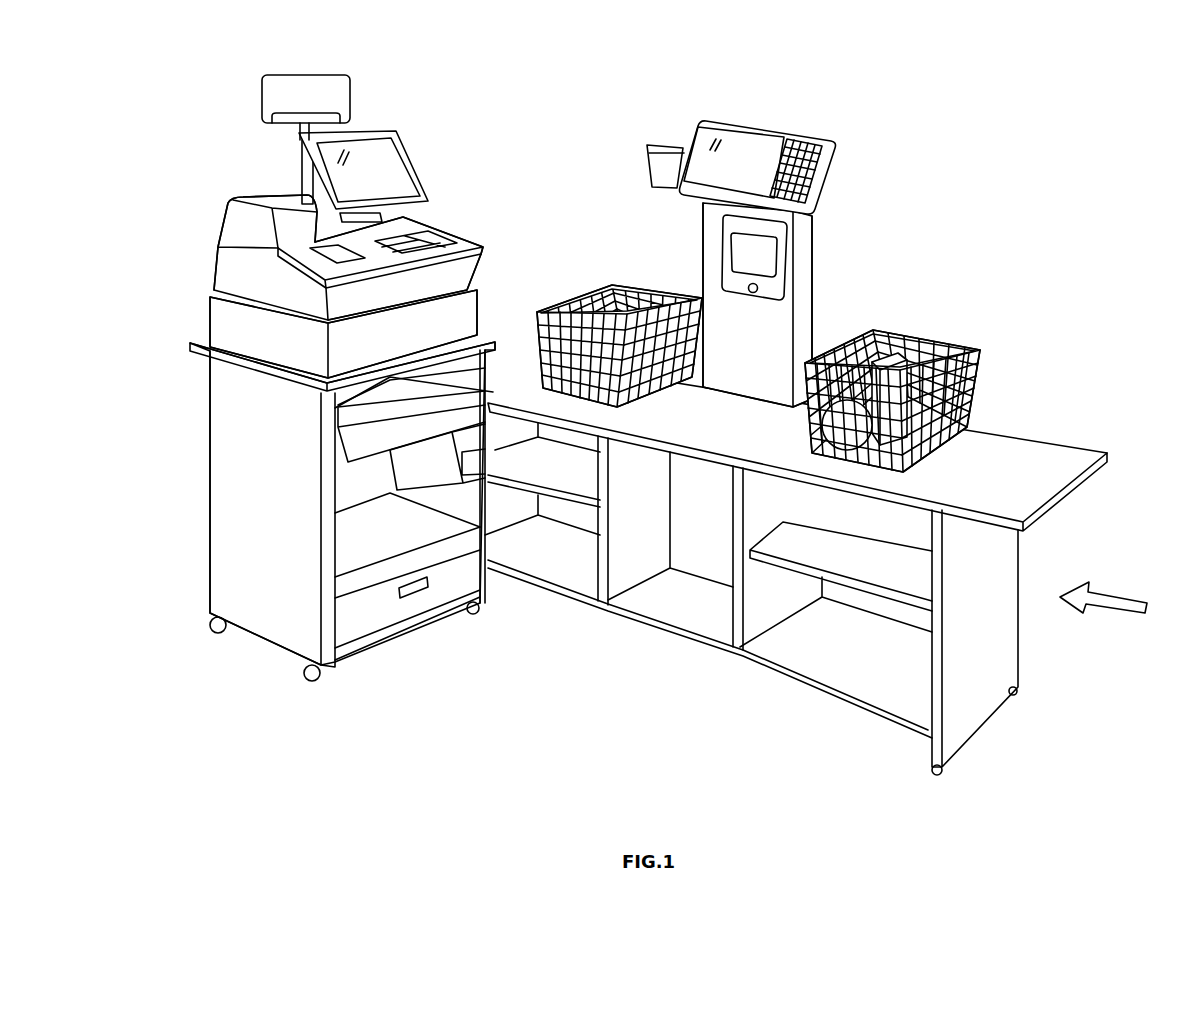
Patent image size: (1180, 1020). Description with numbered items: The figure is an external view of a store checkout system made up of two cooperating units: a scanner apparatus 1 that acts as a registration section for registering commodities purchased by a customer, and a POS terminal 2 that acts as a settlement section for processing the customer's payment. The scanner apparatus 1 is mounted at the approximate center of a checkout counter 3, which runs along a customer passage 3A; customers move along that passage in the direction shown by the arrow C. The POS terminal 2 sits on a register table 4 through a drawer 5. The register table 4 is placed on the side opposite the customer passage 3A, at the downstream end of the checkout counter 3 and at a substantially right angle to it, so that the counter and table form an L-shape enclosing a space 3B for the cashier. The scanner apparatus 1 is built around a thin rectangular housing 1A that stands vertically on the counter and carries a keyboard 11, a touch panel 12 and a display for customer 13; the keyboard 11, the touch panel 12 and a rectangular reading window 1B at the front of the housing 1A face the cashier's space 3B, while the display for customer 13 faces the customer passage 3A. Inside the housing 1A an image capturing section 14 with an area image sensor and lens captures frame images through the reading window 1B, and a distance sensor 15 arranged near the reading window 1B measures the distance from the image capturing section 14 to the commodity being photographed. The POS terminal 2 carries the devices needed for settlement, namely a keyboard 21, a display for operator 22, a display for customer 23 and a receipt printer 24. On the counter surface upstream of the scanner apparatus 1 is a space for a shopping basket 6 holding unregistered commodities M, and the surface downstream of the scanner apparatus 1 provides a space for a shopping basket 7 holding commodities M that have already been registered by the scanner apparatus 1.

The scanner apparatus 1 is at (745, 245).
The housing 1A is at (814, 290).
The reading window 1B is at (745, 254).
The POS terminal 2 is at (336, 197).
The checkout counter 3 is at (818, 576).
The customer passage 3A is at (1090, 636).
The space for a shop clerk 3B is at (568, 688).
The register table 4 is at (210, 460).
The drawer 5 is at (210, 318).
The shopping basket 6 is at (913, 382).
The shopping basket 7 is at (578, 296).
The keyboard 11 is at (758, 148).
The touch panel 12 is at (750, 135).
The display for customer 13 is at (647, 172).
The image capturing section 14 is at (778, 228).
The distance sensor 15 is at (753, 293).
The keyboard 21 is at (440, 237).
The display for operator 22 is at (412, 158).
The display for customer 23 is at (350, 95).
The receipt printer 24 is at (272, 200).
The commodity M is at (890, 338).
The arrow indicating customer movement direction C is at (1118, 592).